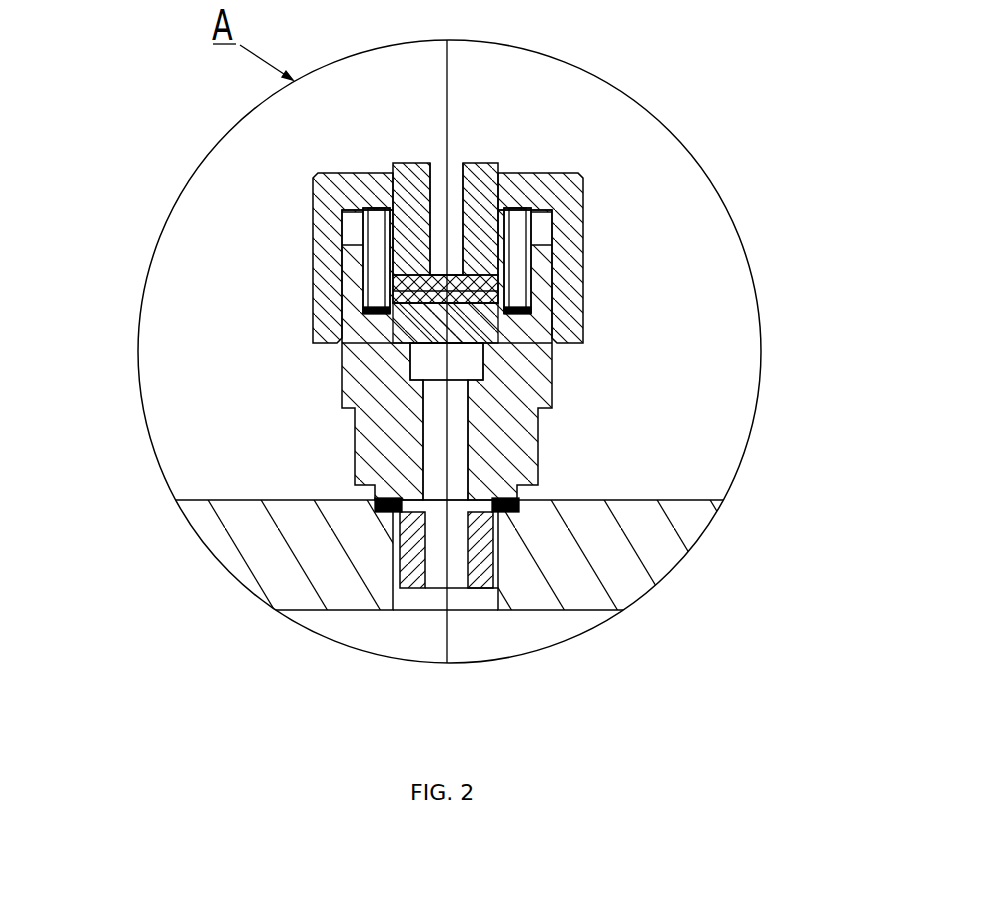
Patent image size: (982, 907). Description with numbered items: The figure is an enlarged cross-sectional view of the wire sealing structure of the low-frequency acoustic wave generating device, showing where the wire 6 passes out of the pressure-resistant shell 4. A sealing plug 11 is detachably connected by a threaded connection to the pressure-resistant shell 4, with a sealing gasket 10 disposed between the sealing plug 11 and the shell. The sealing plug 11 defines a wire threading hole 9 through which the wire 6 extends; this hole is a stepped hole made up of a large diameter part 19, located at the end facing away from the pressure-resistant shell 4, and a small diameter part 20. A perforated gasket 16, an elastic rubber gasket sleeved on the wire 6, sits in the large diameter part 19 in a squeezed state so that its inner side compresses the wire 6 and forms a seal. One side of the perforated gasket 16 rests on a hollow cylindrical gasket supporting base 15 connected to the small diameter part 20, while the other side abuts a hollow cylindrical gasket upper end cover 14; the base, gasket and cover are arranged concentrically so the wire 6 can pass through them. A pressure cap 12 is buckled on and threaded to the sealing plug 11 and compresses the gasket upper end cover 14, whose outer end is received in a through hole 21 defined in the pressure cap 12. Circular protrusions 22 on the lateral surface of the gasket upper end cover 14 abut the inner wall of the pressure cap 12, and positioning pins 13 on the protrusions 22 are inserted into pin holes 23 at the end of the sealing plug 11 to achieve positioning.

The pressure-resistant shell 4 is at (638, 557).
The wire 6 is at (443, 152).
The wire threading hole 9 is at (430, 558).
The sealing gasket 10 is at (378, 505).
The sealing plug 11 is at (388, 405).
The pressure cap 12 is at (325, 322).
The positioning pin 13 is at (373, 268).
The gasket upper end cover 14 is at (408, 222).
The gasket supporting base 15 is at (472, 332).
The perforated gasket 16 is at (484, 297).
The large diameter part 19 is at (472, 358).
The small diameter part 20 is at (458, 482).
The through hole 21 is at (452, 185).
The protrusion 22 is at (533, 223).
The pin hole 23 is at (522, 283).